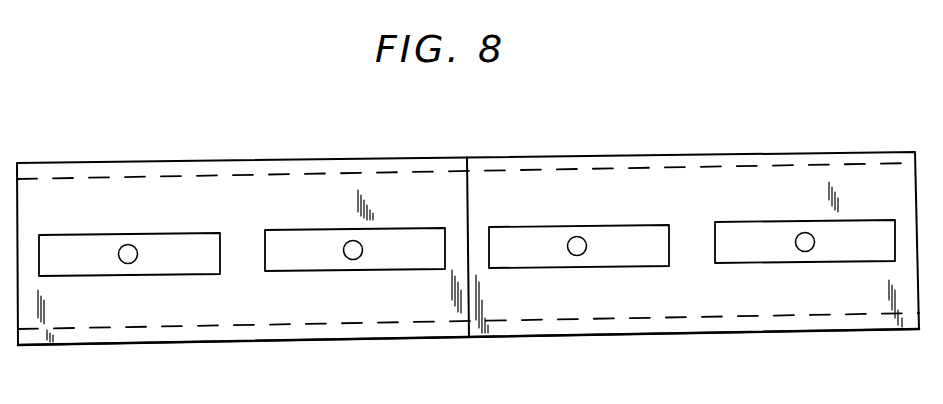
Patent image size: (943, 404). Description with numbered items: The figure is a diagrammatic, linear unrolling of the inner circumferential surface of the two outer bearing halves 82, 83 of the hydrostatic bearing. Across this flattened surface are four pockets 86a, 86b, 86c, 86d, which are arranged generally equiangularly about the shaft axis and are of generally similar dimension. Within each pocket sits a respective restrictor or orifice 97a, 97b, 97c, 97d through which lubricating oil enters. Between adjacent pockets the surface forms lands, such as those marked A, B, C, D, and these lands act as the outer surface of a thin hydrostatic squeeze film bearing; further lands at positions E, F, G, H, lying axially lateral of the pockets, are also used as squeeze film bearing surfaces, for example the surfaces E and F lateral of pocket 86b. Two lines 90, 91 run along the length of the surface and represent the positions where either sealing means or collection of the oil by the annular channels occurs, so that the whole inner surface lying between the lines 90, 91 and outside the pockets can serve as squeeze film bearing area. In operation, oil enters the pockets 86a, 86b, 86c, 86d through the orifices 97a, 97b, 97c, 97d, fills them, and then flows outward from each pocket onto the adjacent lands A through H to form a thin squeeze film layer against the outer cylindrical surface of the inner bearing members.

The outer bearing half 82 is at (213, 162).
The outer bearing half 83 is at (703, 152).
The line 90 is at (73, 178).
The line 91 is at (108, 328).
The pocket 86a is at (182, 257).
The pocket 86b is at (312, 255).
The pocket 86c is at (538, 250).
The pocket 86d is at (752, 252).
The restrictor or orifice 97a is at (128, 244).
The restrictor or orifice 97b is at (345, 242).
The restrictor or orifice 97c is at (573, 237).
The restrictor or orifice 97d is at (803, 233).
The land A is at (482, 262).
The land B is at (695, 252).
The land C is at (29, 263).
The land D is at (242, 257).
The land E is at (373, 197).
The land F is at (396, 278).
The land G is at (830, 278).
The land H is at (768, 205).